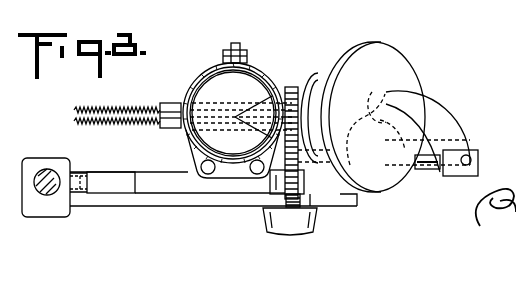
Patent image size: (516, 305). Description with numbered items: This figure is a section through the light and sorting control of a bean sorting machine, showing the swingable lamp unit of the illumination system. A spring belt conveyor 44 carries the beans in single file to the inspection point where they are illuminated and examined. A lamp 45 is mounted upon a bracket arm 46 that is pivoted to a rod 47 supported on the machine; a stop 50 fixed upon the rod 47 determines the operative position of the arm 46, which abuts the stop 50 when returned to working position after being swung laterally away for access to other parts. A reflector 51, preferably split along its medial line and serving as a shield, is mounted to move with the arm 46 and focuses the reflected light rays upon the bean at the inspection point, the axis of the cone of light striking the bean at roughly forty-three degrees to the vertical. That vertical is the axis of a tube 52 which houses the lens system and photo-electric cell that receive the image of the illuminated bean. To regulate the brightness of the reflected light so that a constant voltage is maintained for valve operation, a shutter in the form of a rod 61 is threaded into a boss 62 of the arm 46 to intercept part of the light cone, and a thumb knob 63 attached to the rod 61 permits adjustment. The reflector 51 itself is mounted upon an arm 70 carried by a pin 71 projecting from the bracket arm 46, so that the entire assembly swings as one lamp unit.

The spring belt conveyor 44 is at (140, 113).
The lamp 45 is at (318, 80).
The bracket arm 46 is at (203, 207).
The rod 47 is at (46, 170).
The stop 50 is at (100, 173).
The reflector 51 is at (400, 63).
The tube 52 is at (205, 66).
The rod 61 is at (294, 87).
The boss 62 is at (304, 186).
The thumb knob 63 is at (303, 228).
The arm 70 is at (445, 116).
The pin 71 is at (428, 168).